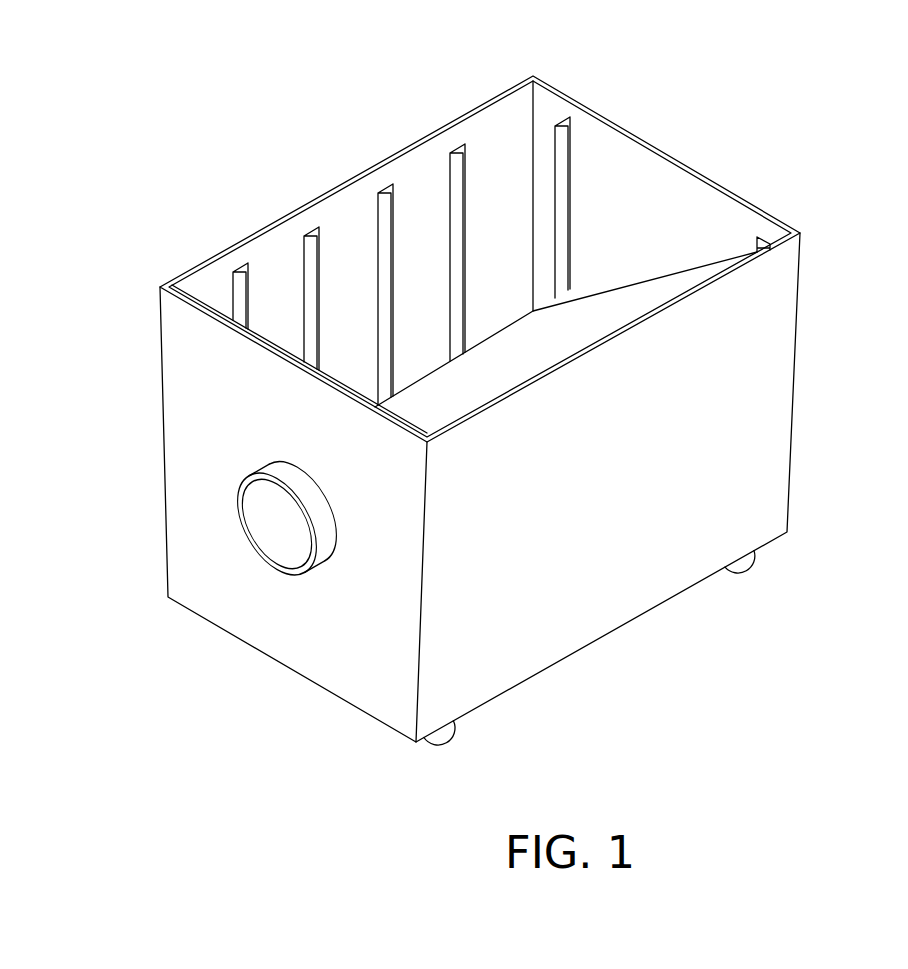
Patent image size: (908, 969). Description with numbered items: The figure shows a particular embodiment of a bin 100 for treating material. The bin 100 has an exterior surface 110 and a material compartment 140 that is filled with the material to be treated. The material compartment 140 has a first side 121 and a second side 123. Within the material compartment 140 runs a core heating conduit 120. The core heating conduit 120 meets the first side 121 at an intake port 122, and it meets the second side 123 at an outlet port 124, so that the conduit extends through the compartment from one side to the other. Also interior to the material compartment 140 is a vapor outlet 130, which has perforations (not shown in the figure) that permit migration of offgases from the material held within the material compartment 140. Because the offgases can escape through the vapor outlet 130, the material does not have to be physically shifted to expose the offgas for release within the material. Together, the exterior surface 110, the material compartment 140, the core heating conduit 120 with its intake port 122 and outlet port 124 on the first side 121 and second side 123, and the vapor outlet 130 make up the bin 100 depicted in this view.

The bin 100 is at (307, 85).
The exterior surface 110 is at (762, 402).
The core heating conduit 120 is at (624, 302).
The first side 121 is at (252, 605).
The intake port 122 is at (247, 513).
The second side 123 is at (658, 185).
The outlet port 124 is at (635, 257).
The vapor outlet 130 is at (312, 263).
The material compartment 140 is at (605, 148).